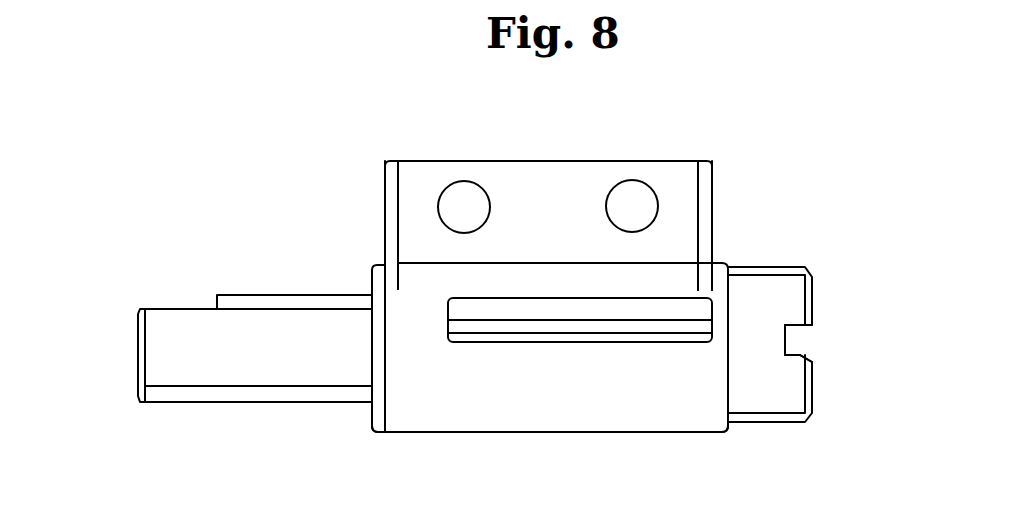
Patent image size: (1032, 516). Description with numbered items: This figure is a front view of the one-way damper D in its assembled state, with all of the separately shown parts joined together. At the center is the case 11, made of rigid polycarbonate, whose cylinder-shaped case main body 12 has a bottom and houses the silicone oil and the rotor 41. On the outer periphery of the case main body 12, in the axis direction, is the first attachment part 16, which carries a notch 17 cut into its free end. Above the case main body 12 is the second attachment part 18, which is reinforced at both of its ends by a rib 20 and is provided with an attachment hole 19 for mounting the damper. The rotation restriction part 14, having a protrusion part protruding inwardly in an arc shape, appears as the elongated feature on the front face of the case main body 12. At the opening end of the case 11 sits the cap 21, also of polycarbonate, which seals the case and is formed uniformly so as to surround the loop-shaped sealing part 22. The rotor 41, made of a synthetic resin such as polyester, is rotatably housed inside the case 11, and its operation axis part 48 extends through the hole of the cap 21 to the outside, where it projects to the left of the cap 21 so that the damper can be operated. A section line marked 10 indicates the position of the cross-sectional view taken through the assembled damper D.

The section line 10 is at (630, 105).
The case 11 is at (738, 433).
The case main body 12 is at (667, 415).
The rotation restriction part 14 is at (663, 308).
The first attachment part 16 is at (790, 303).
The notch 17 is at (800, 345).
The second attachment part 18 is at (538, 192).
The attachment hole 19 is at (463, 205).
The rib 20 is at (392, 207).
The cap 21 is at (363, 272).
The sealing part 22 is at (384, 430).
The rotor 41 is at (218, 290).
The operation axis part 48 is at (292, 368).
The one-way damper D is at (718, 155).